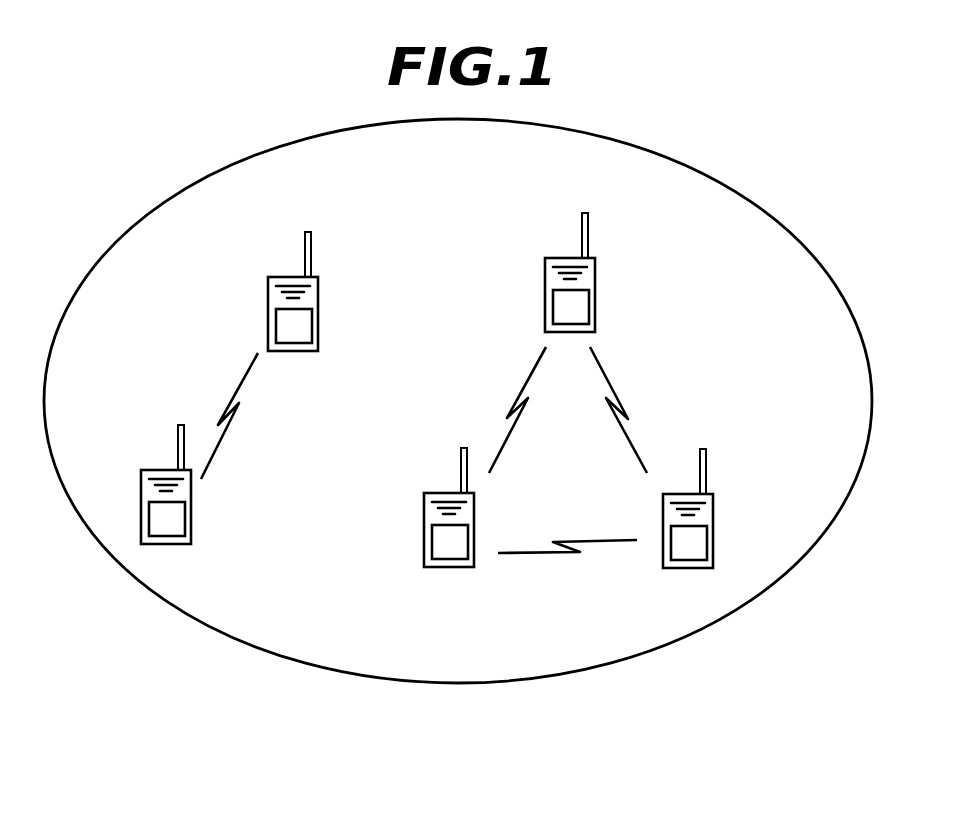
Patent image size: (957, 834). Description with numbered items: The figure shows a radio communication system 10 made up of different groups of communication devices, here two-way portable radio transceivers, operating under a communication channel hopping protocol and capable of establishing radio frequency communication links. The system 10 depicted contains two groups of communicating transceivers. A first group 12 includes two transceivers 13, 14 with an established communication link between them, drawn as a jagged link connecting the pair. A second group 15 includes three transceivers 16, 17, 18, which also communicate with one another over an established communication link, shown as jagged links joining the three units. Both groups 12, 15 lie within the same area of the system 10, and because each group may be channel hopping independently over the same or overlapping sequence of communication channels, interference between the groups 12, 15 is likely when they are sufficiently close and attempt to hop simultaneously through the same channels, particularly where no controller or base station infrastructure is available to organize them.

The radio communication system 10 is at (149, 679).
The first group 12 is at (145, 346).
The transceiver 13 is at (197, 544).
The transceiver 14 is at (330, 263).
The second group 15 is at (459, 407).
The transceiver 16 is at (603, 290).
The transceiver 17 is at (448, 568).
The transceiver 18 is at (714, 536).